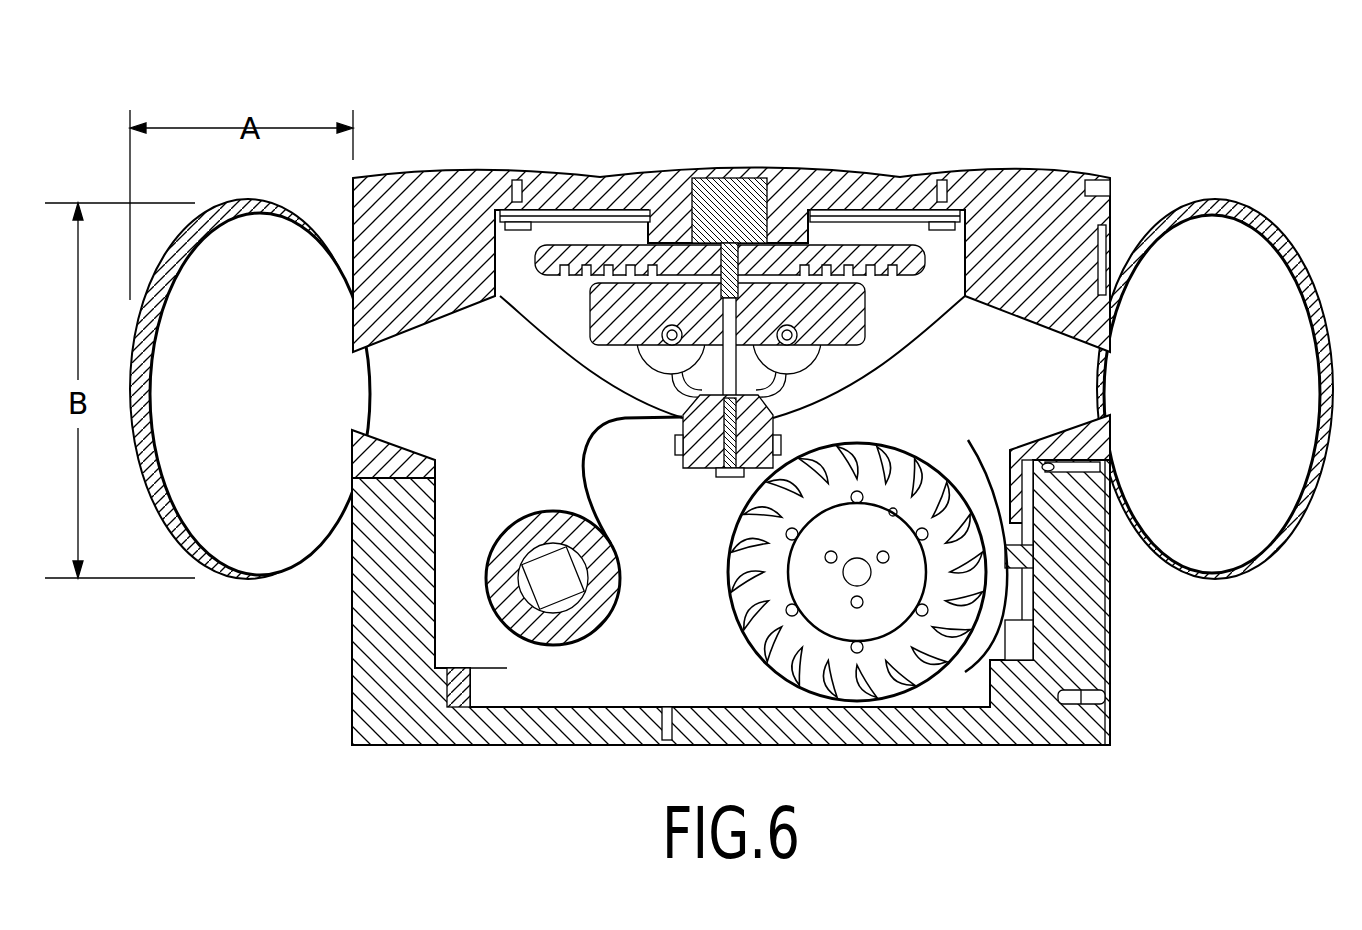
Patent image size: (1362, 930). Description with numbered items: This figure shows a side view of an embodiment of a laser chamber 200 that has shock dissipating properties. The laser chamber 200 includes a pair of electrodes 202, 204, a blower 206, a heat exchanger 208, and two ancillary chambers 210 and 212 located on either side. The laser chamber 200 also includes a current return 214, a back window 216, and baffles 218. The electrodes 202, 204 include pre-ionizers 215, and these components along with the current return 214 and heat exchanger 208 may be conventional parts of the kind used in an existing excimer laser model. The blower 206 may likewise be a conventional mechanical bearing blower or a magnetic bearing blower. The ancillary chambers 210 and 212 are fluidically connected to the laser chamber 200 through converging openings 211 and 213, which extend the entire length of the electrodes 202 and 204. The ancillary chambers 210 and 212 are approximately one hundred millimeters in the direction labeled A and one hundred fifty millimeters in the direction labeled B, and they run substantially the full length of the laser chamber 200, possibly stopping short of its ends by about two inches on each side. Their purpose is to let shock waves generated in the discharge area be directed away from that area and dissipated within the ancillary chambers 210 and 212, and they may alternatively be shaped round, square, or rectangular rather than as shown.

The laser chamber 200 is at (1100, 145).
The electrode 202 is at (865, 320).
The electrode 204 is at (800, 410).
The blower 206 is at (747, 648).
The heat exchanger 208 is at (520, 515).
The ancillary chamber 210 is at (180, 566).
The converging opening 211 is at (338, 383).
The ancillary chamber 212 is at (1210, 582).
The converging opening 213 is at (1138, 383).
The current return 214 is at (508, 300).
The pre-ionizer 215 is at (812, 366).
The back window 216 is at (690, 378).
The baffle 218 is at (587, 443).